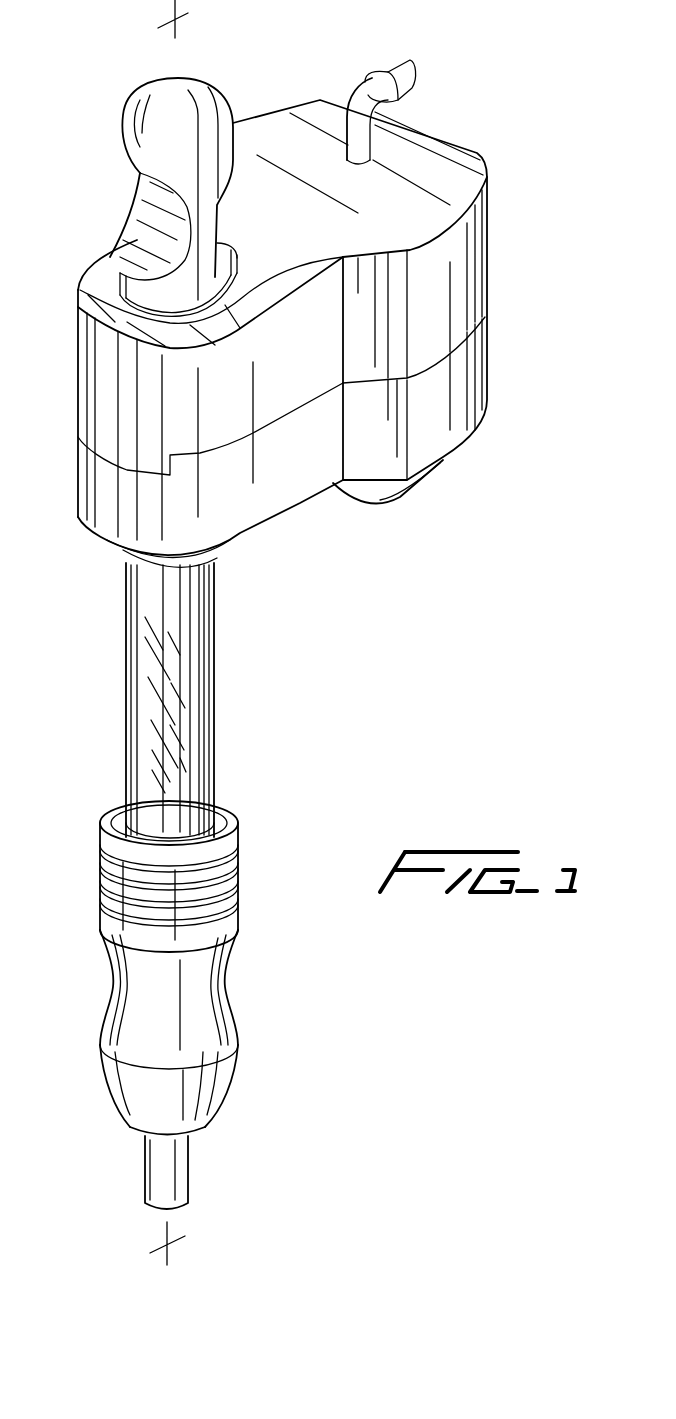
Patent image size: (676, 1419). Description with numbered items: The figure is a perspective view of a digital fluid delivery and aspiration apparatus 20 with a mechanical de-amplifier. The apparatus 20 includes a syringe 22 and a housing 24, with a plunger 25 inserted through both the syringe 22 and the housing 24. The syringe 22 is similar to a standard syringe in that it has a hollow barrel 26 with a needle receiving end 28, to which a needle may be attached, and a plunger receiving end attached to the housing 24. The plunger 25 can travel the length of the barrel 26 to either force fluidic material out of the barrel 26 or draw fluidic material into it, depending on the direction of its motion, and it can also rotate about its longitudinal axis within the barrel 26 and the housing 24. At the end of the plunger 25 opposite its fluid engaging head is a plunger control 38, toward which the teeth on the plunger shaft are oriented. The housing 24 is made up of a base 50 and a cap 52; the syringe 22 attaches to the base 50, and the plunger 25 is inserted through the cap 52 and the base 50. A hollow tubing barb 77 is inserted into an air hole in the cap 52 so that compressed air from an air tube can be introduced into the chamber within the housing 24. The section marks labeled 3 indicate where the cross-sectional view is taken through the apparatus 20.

The section line 3- 3 is at (180, 23).
The digital fluid delivery and aspiration apparatus 20 is at (300, 73).
The syringe 22 is at (182, 700).
The housing 24 is at (485, 213).
The plunger 25 is at (172, 618).
The hollow barrel 26 is at (140, 703).
The needle receiving end 28 is at (180, 1173).
The plunger control 38 is at (142, 105).
The base 50 is at (463, 392).
The cap 52 is at (457, 292).
The hollow tubing barb 77 is at (413, 72).